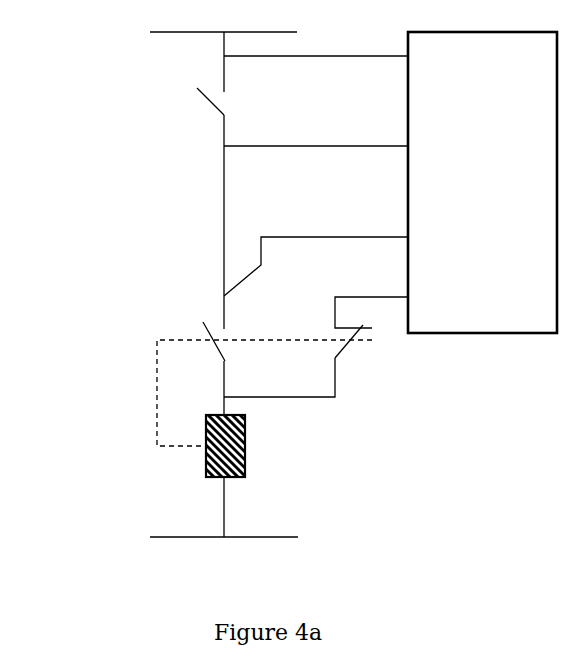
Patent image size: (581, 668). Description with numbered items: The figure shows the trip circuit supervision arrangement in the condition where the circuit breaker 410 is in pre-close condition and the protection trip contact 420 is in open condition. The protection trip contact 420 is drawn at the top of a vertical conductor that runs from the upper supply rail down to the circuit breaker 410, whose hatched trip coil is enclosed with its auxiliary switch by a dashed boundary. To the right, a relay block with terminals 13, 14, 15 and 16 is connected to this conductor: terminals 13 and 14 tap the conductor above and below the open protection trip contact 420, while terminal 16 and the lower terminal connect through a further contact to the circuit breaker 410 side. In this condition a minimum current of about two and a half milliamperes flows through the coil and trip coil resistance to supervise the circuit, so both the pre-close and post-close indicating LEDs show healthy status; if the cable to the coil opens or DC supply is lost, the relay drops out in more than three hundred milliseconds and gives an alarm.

The protection trip contact 420 is at (135, 178).
The circuit breaker 410 is at (215, 417).
The control unit terminal 13 is at (324, 54).
The control unit terminal 14 is at (324, 133).
The control unit terminal 15 is at (415, 202).
The control unit terminal 16 is at (324, 264).